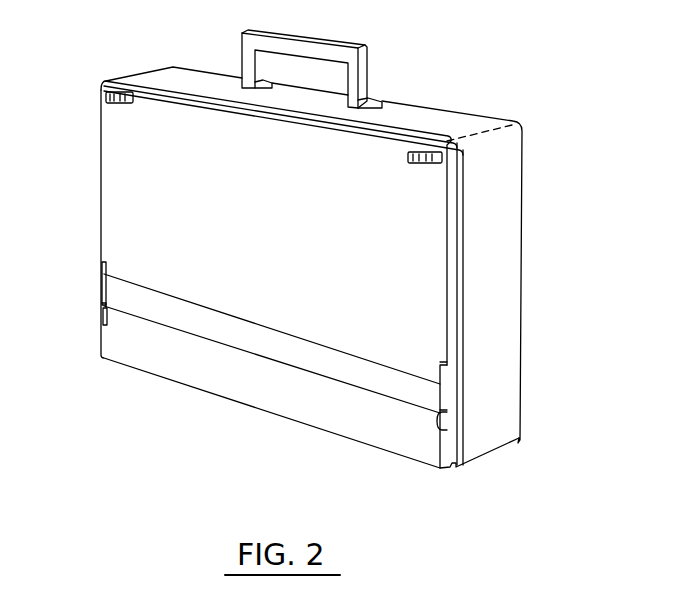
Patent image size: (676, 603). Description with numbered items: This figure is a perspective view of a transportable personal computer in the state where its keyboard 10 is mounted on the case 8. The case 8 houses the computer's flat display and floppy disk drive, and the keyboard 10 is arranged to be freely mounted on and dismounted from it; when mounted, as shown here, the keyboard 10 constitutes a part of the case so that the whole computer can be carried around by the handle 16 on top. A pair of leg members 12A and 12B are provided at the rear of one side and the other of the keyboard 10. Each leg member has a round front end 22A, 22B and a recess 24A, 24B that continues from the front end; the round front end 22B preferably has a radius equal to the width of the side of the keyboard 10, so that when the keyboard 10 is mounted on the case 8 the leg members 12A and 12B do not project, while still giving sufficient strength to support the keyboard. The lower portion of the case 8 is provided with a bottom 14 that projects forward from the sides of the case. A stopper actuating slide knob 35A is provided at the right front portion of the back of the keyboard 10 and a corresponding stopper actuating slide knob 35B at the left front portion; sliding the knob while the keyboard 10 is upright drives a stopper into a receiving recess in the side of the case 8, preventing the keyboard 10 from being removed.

The case 8 is at (505, 200).
The keyboard 10 is at (448, 285).
The bottom 14 is at (375, 431).
The handle 16 is at (330, 48).
The stopper actuating slide knob 35A is at (430, 151).
The stopper actuating slide knob 35B is at (118, 104).
The leg member 12A is at (447, 388).
The leg member 12B is at (102, 274).
The recess 24A is at (445, 417).
The recess 24B is at (102, 308).
The round front end 22A is at (450, 423).
The round front end 22B is at (102, 318).